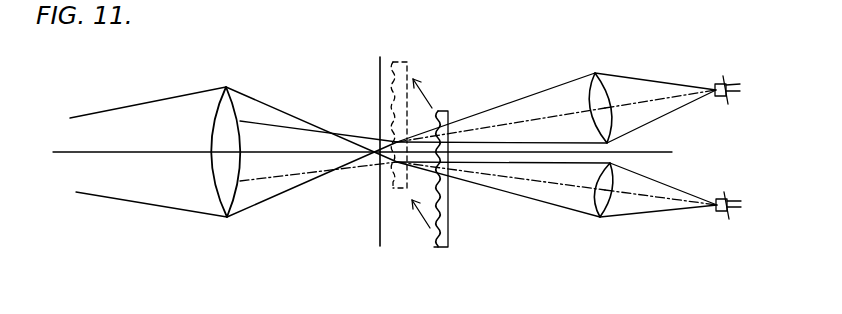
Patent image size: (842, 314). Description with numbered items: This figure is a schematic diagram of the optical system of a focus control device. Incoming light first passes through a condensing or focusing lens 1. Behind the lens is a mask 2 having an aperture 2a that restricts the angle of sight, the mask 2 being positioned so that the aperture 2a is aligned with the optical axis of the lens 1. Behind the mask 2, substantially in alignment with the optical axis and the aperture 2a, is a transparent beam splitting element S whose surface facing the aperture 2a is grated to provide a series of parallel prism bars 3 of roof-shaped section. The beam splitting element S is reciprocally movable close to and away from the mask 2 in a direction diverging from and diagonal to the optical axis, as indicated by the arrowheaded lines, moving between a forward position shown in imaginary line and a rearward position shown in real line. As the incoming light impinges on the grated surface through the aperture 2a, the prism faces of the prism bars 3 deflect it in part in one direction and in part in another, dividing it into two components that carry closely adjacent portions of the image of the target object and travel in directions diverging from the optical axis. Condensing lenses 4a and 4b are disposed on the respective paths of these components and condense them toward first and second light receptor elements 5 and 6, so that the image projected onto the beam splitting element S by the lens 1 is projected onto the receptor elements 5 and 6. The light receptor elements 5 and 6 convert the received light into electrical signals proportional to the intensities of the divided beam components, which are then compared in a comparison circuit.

The condensing lens 1 is at (226, 87).
The mask 2 is at (379, 78).
The aperture 2a is at (376, 168).
The prism bars 3 is at (462, 159).
The beam splitting element S is at (445, 216).
The condensing lens 4a is at (595, 73).
The condensing lens 4b is at (600, 217).
The first light receptor element 5 is at (715, 83).
The second light receptor element 6 is at (716, 211).